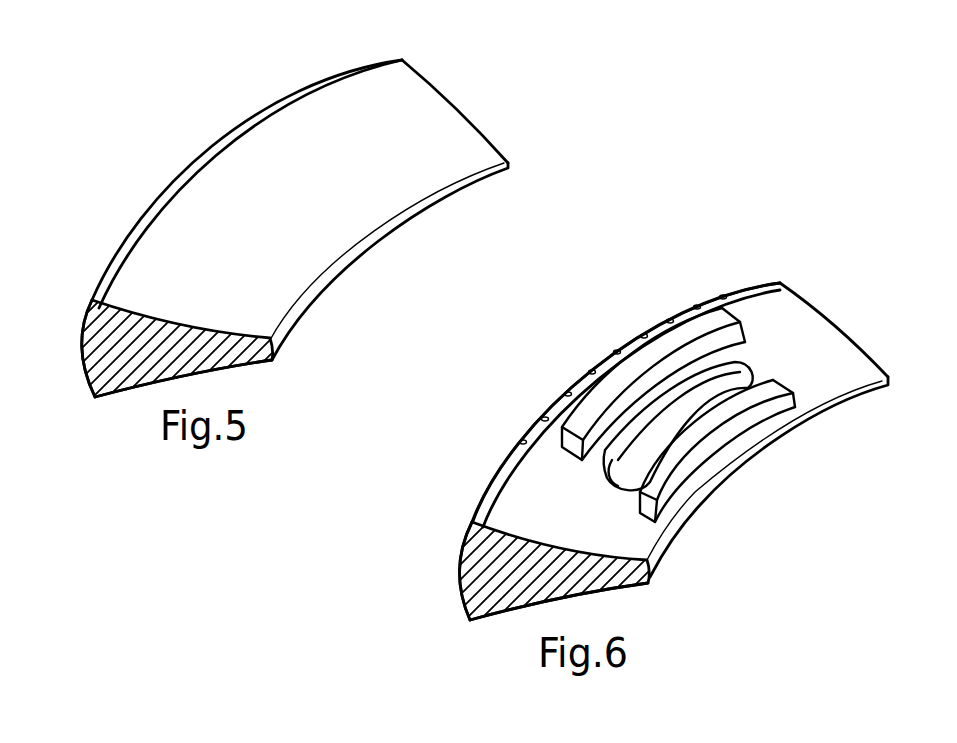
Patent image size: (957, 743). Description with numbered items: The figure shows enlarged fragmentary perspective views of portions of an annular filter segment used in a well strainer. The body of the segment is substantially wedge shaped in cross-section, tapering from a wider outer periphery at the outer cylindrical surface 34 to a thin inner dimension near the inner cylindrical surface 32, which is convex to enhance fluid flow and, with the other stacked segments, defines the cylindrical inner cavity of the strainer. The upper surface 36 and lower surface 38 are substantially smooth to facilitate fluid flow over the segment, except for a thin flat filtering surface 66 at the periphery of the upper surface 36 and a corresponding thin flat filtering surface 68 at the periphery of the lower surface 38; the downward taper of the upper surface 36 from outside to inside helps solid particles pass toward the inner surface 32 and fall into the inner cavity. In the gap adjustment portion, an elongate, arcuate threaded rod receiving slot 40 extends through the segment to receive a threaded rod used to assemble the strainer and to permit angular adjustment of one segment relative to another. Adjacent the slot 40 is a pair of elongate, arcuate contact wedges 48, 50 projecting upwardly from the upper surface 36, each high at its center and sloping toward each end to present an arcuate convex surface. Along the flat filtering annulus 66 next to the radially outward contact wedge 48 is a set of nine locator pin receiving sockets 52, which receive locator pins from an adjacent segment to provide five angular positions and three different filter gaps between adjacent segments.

In FIG. 5, the inner cylindrical surface 32 is at (350, 248).
In FIG. 6, the inner cylindrical surface 32 is at (660, 543).
In FIG. 5, the outer cylindrical surface 34 is at (88, 320).
In FIG. 6, the outer cylindrical surface 34 is at (462, 547).
In FIG. 5, the upper surface 36 is at (430, 112).
In FIG. 6, the upper surface 36 is at (797, 320).
In FIG. 5, the lower surface 38 is at (210, 367).
In FIG. 6, the lower surface 38 is at (587, 590).
In FIG. 6, the threaded rod receiving slot 40 is at (612, 460).
In FIG. 6, the contact wedge 48 is at (742, 293).
In FIG. 6, the contact wedge 50 is at (765, 393).
In FIG. 6, the locator pin receiving socket 52 is at (670, 320).
In FIG. 5, the thin flat filtering surface 66 is at (205, 152).
In FIG. 6, the thin flat filtering surface 66 is at (502, 470).
In FIG. 5, the thin flat filtering surface 68 is at (95, 400).
In FIG. 6, the thin flat filtering surface 68 is at (477, 623).